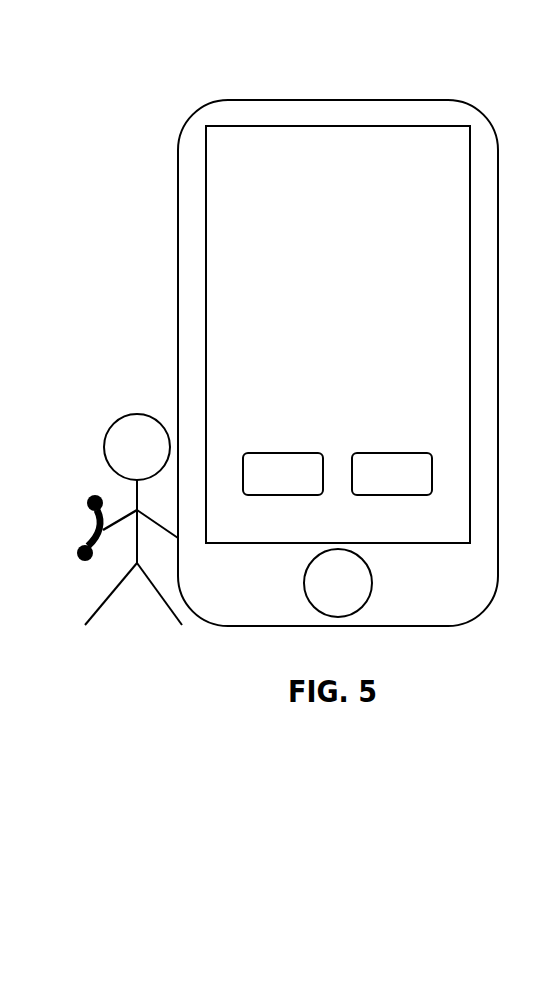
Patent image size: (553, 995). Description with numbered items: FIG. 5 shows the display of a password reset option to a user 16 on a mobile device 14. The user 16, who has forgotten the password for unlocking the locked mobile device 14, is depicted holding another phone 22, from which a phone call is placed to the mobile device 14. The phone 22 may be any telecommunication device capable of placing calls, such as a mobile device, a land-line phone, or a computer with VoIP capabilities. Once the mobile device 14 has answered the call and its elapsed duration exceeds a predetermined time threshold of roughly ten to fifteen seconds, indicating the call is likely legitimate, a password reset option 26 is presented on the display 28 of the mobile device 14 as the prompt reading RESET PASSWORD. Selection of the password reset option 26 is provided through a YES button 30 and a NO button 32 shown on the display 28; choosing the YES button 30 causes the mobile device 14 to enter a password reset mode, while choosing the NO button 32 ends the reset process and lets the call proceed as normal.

The mobile device 14 is at (434, 71).
The display 28 is at (200, 168).
The password reset option 26 is at (335, 456).
The YES button 30 is at (300, 495).
The NO button 32 is at (402, 495).
The user 16 is at (94, 394).
The phone 22 is at (86, 500).